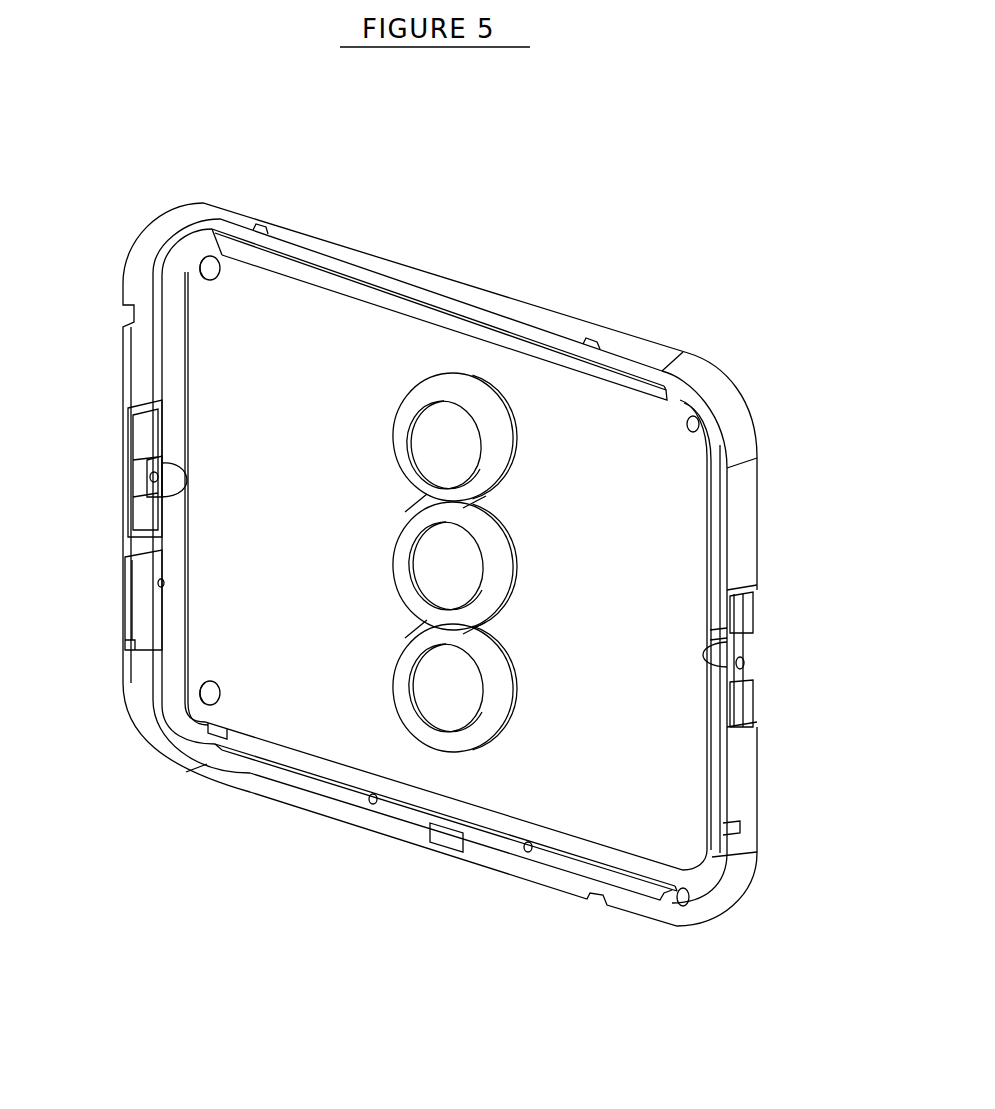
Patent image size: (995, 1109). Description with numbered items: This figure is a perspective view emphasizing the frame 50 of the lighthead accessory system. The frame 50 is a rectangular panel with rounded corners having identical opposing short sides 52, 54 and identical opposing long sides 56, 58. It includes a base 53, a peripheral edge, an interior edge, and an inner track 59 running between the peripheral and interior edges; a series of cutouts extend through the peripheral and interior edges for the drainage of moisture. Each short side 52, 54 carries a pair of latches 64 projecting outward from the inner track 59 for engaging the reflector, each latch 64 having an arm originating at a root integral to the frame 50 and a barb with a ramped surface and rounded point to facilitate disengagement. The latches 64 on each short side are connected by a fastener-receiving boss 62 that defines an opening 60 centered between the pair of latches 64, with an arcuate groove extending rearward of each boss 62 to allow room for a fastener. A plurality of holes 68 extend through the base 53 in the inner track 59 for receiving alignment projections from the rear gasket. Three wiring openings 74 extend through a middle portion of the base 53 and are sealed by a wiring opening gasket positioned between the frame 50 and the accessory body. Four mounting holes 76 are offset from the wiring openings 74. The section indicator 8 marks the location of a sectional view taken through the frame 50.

The frame 50 is at (143, 156).
The short side 52 is at (745, 786).
The base 53 is at (300, 330).
The short side 54 is at (145, 597).
The long side 56 is at (586, 330).
The long side 58 is at (235, 775).
The inner track 59 is at (633, 860).
The opening 60 is at (745, 664).
The fastener-receiving boss 62 is at (150, 467).
The latch 64 is at (760, 613).
The hole 68 is at (528, 853).
The wiring opening 74 is at (468, 440).
The mounting hole 76 is at (210, 257).
The section line indicator 8 is at (385, 255).